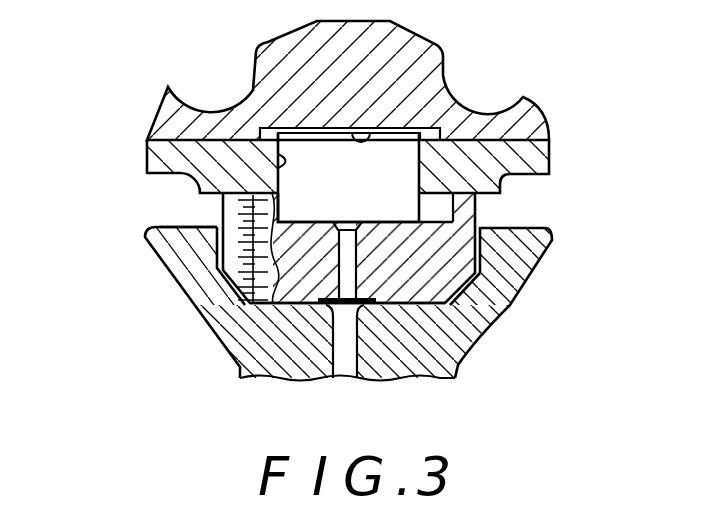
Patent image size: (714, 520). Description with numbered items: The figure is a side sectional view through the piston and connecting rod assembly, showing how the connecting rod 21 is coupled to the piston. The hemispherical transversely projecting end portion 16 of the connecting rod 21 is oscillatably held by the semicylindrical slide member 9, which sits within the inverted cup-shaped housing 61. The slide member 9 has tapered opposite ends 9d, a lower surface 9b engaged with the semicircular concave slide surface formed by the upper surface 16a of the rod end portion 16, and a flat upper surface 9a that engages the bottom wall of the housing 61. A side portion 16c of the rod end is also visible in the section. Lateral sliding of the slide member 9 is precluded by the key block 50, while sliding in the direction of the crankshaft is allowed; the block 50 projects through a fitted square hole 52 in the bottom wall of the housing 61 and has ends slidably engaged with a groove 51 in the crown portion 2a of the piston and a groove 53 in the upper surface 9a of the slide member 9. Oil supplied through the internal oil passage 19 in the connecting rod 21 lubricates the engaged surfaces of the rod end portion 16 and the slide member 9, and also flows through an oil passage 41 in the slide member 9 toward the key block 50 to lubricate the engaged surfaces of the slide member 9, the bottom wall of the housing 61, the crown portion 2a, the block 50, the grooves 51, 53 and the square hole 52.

The crown portion 2a is at (258, 85).
The groove 51 is at (353, 133).
The key block 50 is at (372, 193).
The square hole 52 is at (278, 162).
The housing 61 is at (183, 168).
The upper surface 9a is at (419, 164).
The groove 53 is at (435, 218).
The slide member 9 is at (439, 276).
The opposite ends 9d is at (240, 268).
The oil passage 41 is at (338, 254).
The lower surface 9b is at (311, 324).
The end portion 16 is at (180, 270).
The upper surface 16a is at (160, 227).
The casing right portion 16c is at (453, 322).
The connecting rod 21 is at (283, 382).
The internal oil passage 19 is at (347, 367).